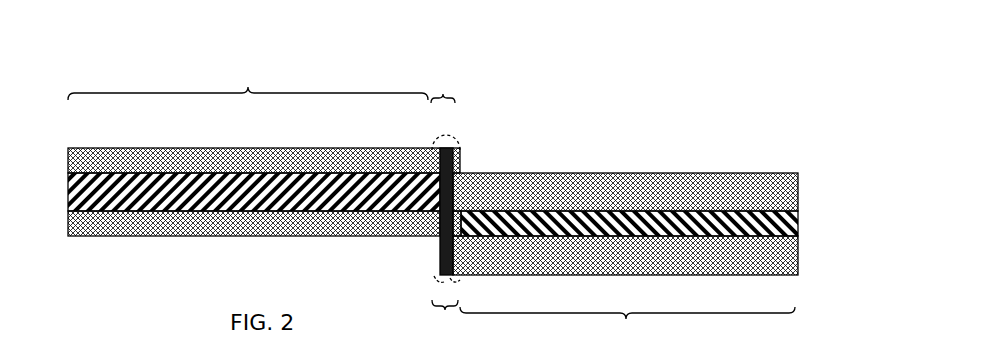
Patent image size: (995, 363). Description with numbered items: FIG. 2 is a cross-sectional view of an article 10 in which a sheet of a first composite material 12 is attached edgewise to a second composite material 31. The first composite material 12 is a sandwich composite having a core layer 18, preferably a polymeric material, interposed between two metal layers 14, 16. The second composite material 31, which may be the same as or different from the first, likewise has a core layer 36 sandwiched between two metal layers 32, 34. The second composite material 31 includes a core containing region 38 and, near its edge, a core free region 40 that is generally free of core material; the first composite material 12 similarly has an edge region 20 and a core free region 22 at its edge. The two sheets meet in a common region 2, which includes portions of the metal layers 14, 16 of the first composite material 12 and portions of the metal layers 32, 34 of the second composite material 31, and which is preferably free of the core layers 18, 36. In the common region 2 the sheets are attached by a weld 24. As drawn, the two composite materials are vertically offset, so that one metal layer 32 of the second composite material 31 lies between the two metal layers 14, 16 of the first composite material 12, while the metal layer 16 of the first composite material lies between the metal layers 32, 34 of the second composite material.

The article 10 is at (593, 48).
The first composite material 12 is at (180, 162).
The metal layer 14 is at (118, 162).
The metal layer 16 is at (158, 210).
The core layer 18 is at (248, 192).
The first cell region 20 is at (248, 78).
The core free region 22 is at (441, 85).
The weld 24 is at (424, 250).
The common region 2 is at (452, 250).
The second composite material 31 is at (628, 186).
The metal layer 32 is at (702, 186).
The metal layer 34 is at (513, 255).
The core layer 36 is at (568, 220).
The core containing region 38 is at (627, 334).
The core free region 40 is at (445, 324).